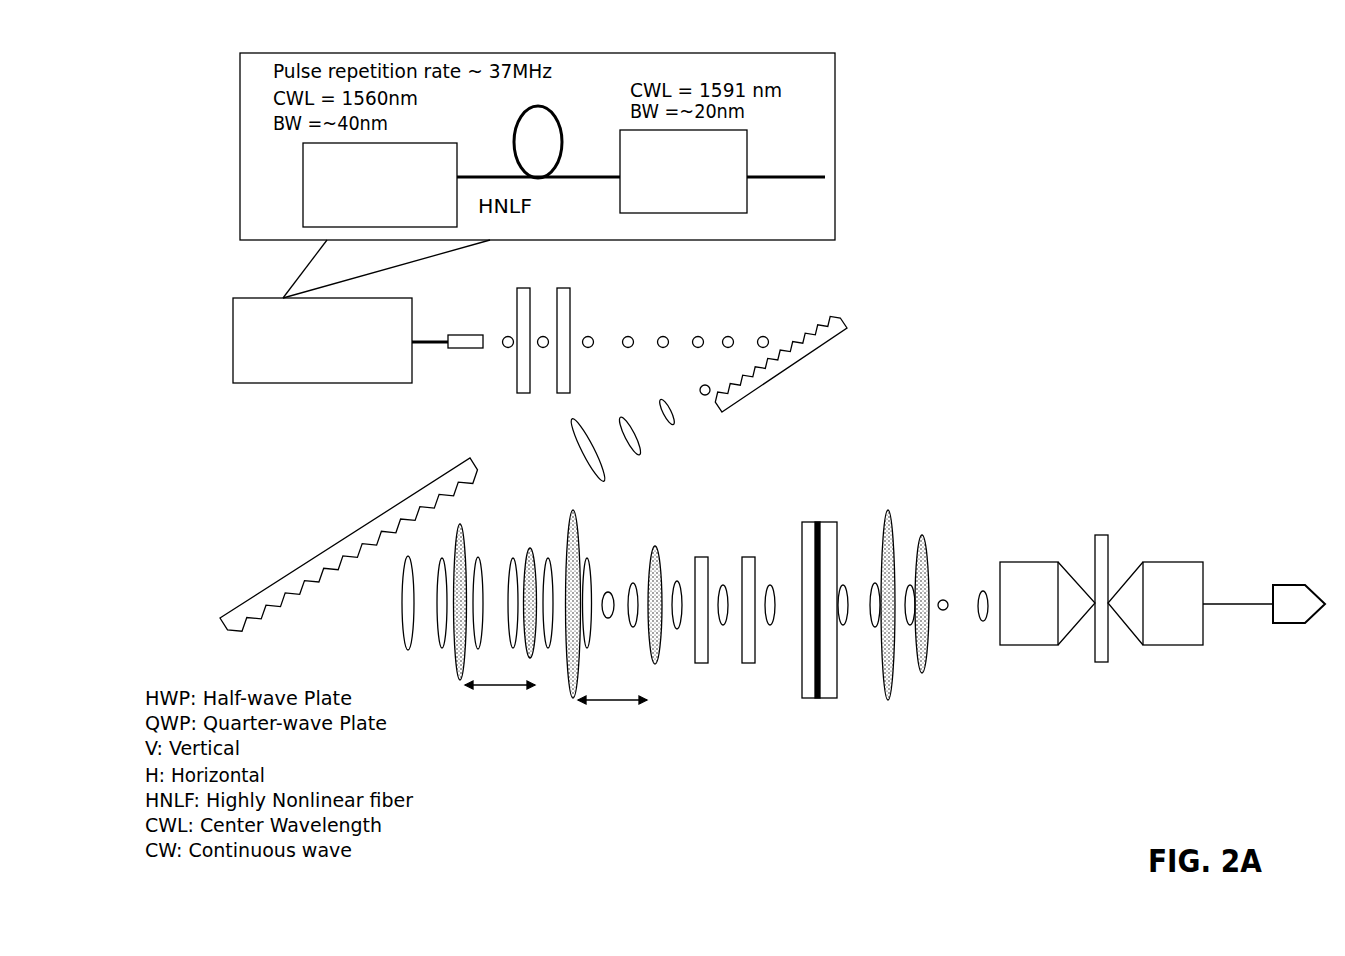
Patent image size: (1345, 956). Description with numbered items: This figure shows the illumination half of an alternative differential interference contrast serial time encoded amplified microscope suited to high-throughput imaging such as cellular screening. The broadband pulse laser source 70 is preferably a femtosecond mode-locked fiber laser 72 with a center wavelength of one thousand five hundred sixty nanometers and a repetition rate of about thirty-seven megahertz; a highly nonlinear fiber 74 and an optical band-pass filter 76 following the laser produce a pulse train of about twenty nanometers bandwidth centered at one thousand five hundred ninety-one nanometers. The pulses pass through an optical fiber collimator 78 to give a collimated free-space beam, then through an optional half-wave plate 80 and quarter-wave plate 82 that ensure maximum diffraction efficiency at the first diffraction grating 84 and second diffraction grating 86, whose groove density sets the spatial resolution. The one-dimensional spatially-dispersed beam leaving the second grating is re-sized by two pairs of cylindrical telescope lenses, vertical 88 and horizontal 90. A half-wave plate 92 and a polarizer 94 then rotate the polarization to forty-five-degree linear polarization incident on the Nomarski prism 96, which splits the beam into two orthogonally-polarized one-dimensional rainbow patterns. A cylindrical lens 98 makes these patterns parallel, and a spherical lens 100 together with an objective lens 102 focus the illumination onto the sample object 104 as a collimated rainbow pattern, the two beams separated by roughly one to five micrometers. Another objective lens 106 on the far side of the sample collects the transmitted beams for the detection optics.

The broadband pulse laser source 70 is at (233, 298).
The femtosecond mode-locked fiber laser 72 is at (447, 143).
The highly nonlinear fiber 74 is at (545, 177).
The optical band-pass filter 76 is at (747, 200).
The optical fiber collimator 78 is at (473, 334).
The half-wave plate 80 is at (552, 270).
The quarter-wave plate 82 is at (608, 384).
The first diffraction grating 84 is at (833, 323).
The second diffraction grating 86 is at (218, 621).
The vertical cylindrical telescope lenses 88 is at (497, 826).
The horizontal cylindrical telescope lenses 90 is at (630, 827).
The half-wave plate 92 is at (702, 517).
The polarizer 94 is at (718, 707).
The Nomarski prism 96 is at (853, 463).
The cylindrical lens 98 is at (892, 765).
The spherical lens 100 is at (955, 475).
The objective lens 102 is at (1048, 500).
The sample object 104 is at (1098, 702).
The objective lens 106 is at (1198, 497).